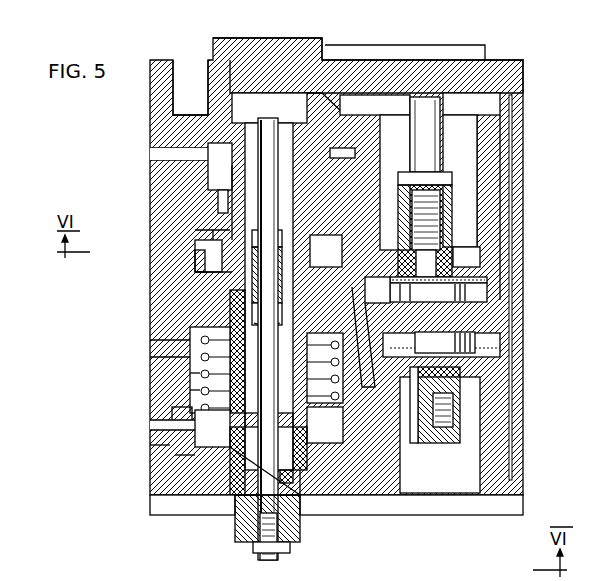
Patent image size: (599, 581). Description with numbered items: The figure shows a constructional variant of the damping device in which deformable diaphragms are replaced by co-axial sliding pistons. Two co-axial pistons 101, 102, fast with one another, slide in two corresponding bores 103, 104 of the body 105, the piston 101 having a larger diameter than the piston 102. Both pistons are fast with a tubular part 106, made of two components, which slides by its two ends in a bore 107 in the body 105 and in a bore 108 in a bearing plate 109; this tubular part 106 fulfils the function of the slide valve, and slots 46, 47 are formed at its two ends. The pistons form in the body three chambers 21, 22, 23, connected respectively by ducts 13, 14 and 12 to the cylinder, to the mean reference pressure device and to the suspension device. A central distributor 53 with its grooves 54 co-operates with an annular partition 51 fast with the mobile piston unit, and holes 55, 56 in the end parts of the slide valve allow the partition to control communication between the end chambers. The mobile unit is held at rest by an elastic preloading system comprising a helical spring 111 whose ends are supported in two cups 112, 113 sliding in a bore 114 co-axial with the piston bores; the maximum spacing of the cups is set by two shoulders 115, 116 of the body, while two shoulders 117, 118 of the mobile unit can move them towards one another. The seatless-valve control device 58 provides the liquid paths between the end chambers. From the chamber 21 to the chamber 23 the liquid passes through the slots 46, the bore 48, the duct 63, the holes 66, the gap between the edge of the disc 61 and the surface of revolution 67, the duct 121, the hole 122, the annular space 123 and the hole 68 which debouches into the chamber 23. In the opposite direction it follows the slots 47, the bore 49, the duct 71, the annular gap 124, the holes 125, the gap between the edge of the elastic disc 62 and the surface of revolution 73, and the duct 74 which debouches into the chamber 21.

The duct 12 is at (152, 152).
The duct 13 is at (150, 425).
The duct 14 is at (195, 243).
The chamber 21 is at (195, 470).
The chamber 22 is at (201, 229).
The chamber 23 is at (187, 89).
The slots 46 is at (289, 475).
The slots 47 is at (300, 123).
The bore 48 is at (252, 520).
The bore 49 is at (263, 97).
The annular partition 51 is at (298, 262).
The central distributor 53 is at (283, 240).
The grooves 54 is at (290, 305).
The holes 55 is at (245, 380).
The holes 56 is at (247, 172).
The seatless-valve control device 58 is at (490, 58).
The disc 61 is at (495, 345).
The elastic disc 62 is at (487, 292).
The duct 63 is at (318, 438).
The holes 66 is at (492, 378).
The surface of revolution 67 is at (414, 443).
The hole 68 is at (366, 142).
The duct 71 is at (335, 107).
The surface of revolution 73 is at (475, 280).
The duct 74 is at (360, 315).
The piston 101 is at (190, 312).
The piston 102 is at (213, 205).
The bore 103 is at (200, 266).
The bore 104 is at (215, 180).
The body 105 is at (163, 122).
The tubular part 106 is at (212, 428).
The bore 107 is at (232, 105).
The bore 108 is at (262, 500).
The bearing plate 109 is at (178, 455).
The helical spring 111 is at (150, 357).
The cup 112 is at (150, 340).
The cup 113 is at (190, 385).
The bore 114 is at (195, 373).
The shoulder 115 is at (190, 330).
The shoulder 116 is at (175, 418).
The shoulder 117 is at (216, 256).
The shoulder 118 is at (172, 440).
The duct 121 is at (503, 180).
The hole 122 is at (500, 203).
The annular space 123 is at (503, 140).
The annular gap 124 is at (453, 125).
The holes 125 is at (465, 250).